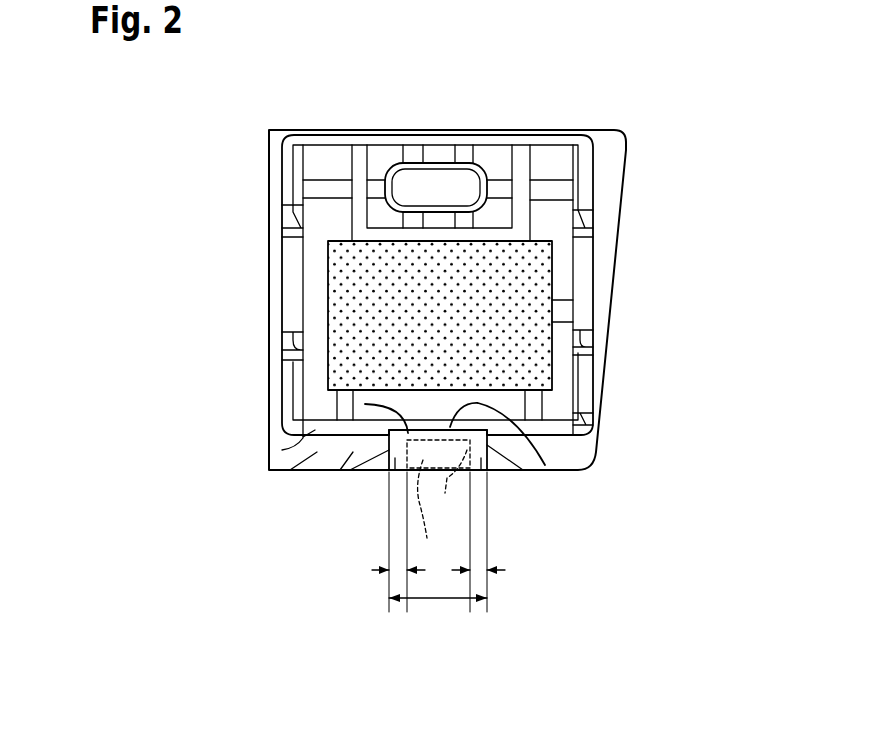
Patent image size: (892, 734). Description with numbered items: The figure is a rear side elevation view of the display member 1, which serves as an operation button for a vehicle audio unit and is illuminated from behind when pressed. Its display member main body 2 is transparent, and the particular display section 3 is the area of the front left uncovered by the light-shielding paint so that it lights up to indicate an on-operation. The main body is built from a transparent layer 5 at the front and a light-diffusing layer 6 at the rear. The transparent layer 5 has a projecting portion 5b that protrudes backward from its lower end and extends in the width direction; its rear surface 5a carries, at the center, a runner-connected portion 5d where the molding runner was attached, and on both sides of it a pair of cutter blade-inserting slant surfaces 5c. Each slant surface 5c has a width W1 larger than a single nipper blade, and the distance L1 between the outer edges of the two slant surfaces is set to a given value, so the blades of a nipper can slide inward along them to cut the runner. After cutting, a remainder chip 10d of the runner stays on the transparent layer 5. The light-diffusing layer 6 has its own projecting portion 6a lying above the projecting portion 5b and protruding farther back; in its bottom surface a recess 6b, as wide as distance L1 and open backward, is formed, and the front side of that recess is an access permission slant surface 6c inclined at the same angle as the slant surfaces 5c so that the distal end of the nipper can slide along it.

The display member 1 is at (672, 121).
The display member main body 2 is at (685, 348).
The particular display section 3 is at (441, 180).
The transparent layer 5 is at (557, 451).
The rear surface 5a is at (353, 452).
The projecting portion 5b is at (317, 452).
The cutter blade-inserting slant surface 5c is at (395, 470).
The runner-connected portion 5d is at (438, 503).
The light-diffusing layer 6 is at (555, 427).
The projecting portion 6a is at (282, 450).
The recess 6b is at (545, 465).
The access permission slant surface 6c is at (365, 404).
The remainder chip 10d is at (442, 494).
The width W1 is at (540, 572).
The distance L1 is at (438, 615).